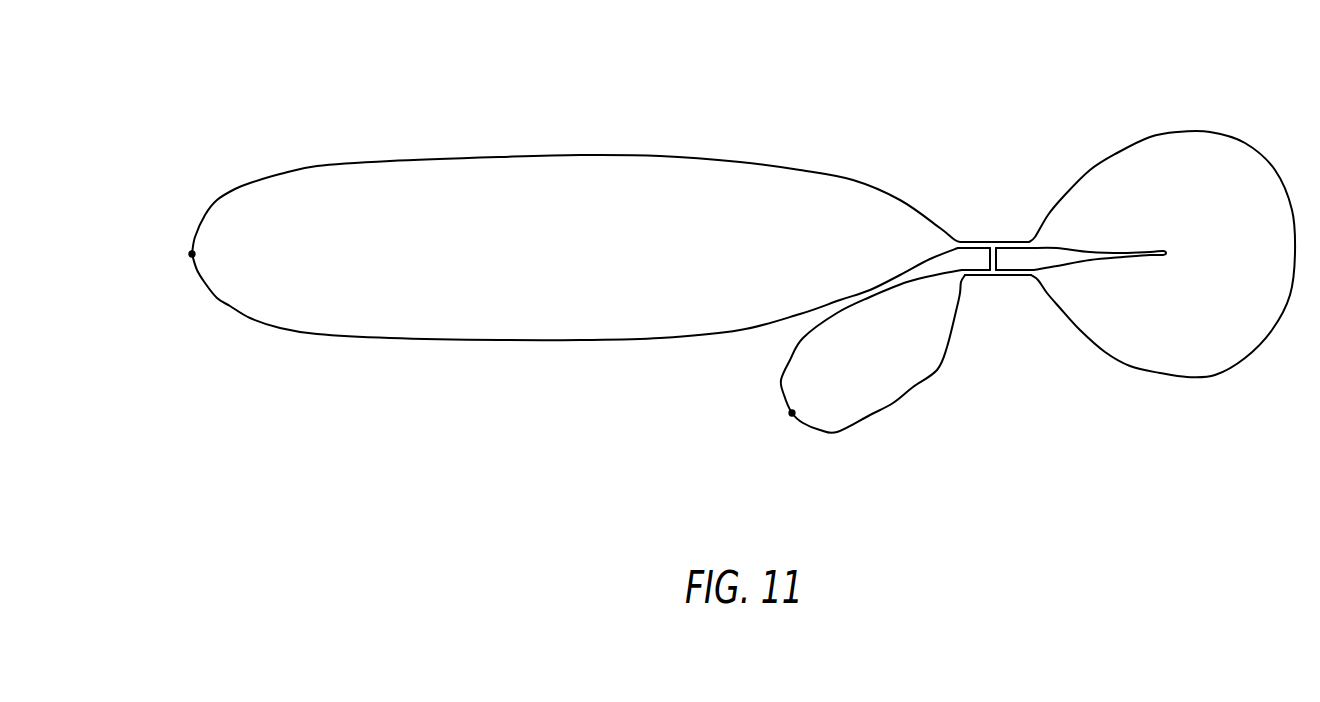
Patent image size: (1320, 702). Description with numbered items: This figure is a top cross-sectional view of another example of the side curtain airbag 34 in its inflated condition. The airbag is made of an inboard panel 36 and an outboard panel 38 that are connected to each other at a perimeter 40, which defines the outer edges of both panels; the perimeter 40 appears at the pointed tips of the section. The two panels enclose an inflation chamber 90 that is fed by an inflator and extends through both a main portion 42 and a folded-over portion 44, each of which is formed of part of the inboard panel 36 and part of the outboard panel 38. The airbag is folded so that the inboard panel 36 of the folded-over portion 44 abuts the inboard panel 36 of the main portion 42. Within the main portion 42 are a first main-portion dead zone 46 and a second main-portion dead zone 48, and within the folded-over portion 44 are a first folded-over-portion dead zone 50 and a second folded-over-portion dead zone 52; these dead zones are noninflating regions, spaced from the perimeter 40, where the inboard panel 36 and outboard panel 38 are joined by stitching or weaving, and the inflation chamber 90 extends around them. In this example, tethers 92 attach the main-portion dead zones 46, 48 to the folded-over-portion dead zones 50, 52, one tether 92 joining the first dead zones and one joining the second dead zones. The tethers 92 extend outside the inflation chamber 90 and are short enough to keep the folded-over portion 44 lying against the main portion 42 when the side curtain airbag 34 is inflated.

The side curtain airbag 34 is at (942, 58).
The inboard panel 36 is at (317, 335).
The outboard panel 38 is at (317, 165).
The perimeter 40 is at (191, 253).
The main portion 42 is at (853, 180).
The folded-over portion 44 is at (898, 402).
The first main-portion dead zone 46 is at (992, 242).
The second main-portion dead zone 48 is at (1011, 207).
The first folded-over-portion dead zone 50 is at (1005, 278).
The second folded-over-portion dead zone 52 is at (1014, 322).
The inflation chamber 90 is at (551, 256).
The tether 92 is at (1000, 257).